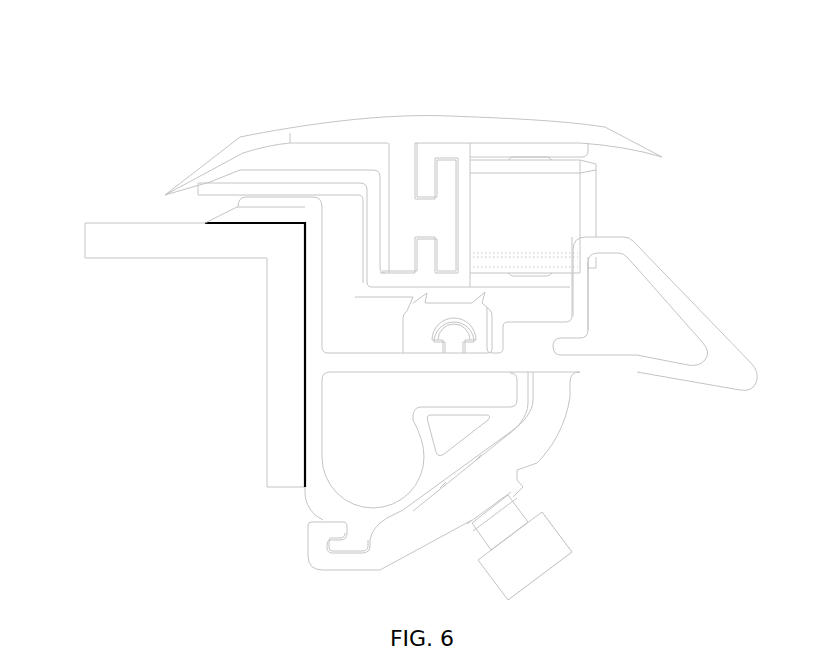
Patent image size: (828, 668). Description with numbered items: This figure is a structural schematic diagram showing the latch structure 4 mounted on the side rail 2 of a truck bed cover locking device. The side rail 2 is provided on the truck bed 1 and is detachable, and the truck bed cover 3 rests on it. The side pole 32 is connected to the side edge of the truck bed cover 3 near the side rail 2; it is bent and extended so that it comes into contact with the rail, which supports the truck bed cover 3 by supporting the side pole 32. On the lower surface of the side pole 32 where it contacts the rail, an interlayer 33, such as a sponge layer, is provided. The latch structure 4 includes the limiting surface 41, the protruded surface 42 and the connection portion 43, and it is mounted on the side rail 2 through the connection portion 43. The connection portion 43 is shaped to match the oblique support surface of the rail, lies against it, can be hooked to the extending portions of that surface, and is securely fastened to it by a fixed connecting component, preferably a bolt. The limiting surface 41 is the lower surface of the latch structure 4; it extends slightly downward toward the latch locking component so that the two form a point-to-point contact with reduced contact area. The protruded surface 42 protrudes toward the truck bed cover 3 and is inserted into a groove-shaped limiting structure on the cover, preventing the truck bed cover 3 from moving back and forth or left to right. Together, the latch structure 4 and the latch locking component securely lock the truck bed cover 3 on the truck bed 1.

The truck bed 1 is at (180, 240).
The side rail 2 is at (318, 372).
The truck bed cover 3 is at (522, 173).
The side pole 32 is at (300, 177).
The interlayer 33 is at (237, 190).
The latch structure 4 is at (707, 254).
The limiting surface 41 is at (636, 372).
The protruded surface 42 is at (612, 237).
The connection portion 43 is at (522, 450).